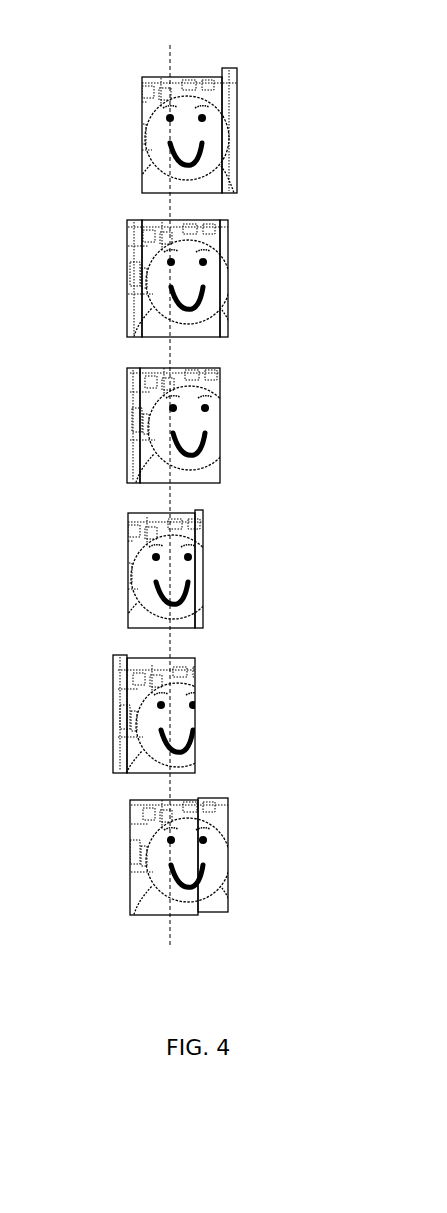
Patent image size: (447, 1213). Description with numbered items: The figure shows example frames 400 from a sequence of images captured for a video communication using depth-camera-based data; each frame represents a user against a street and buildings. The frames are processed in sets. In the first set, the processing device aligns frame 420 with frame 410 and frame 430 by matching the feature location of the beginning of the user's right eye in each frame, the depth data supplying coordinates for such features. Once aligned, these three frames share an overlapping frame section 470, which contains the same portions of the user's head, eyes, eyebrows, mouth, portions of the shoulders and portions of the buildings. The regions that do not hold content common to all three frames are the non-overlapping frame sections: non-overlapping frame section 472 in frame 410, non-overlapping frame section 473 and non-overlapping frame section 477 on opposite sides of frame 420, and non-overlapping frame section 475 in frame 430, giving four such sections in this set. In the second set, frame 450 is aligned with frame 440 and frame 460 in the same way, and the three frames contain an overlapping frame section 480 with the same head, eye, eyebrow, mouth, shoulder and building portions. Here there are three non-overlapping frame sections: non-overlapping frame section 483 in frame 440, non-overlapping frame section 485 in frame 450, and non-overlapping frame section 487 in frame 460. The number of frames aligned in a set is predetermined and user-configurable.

The example frames 400 is at (302, 150).
The frame 410 is at (136, 136).
The frame 420 is at (136, 280).
The frame 430 is at (137, 427).
The frame 440 is at (129, 574).
The frame 450 is at (131, 720).
The frame 460 is at (136, 859).
The overlapping frame section 470 is at (163, 278).
The non-overlapping frame section 472 is at (238, 66).
The non-overlapping frame section 473 is at (125, 312).
The non-overlapping frame section 475 is at (125, 460).
The non-overlapping frame section 477 is at (203, 337).
The overlapping frame section 480 is at (152, 735).
The non-overlapping frame section 483 is at (195, 628).
The non-overlapping frame section 485 is at (115, 745).
The non-overlapping frame section 487 is at (202, 915).